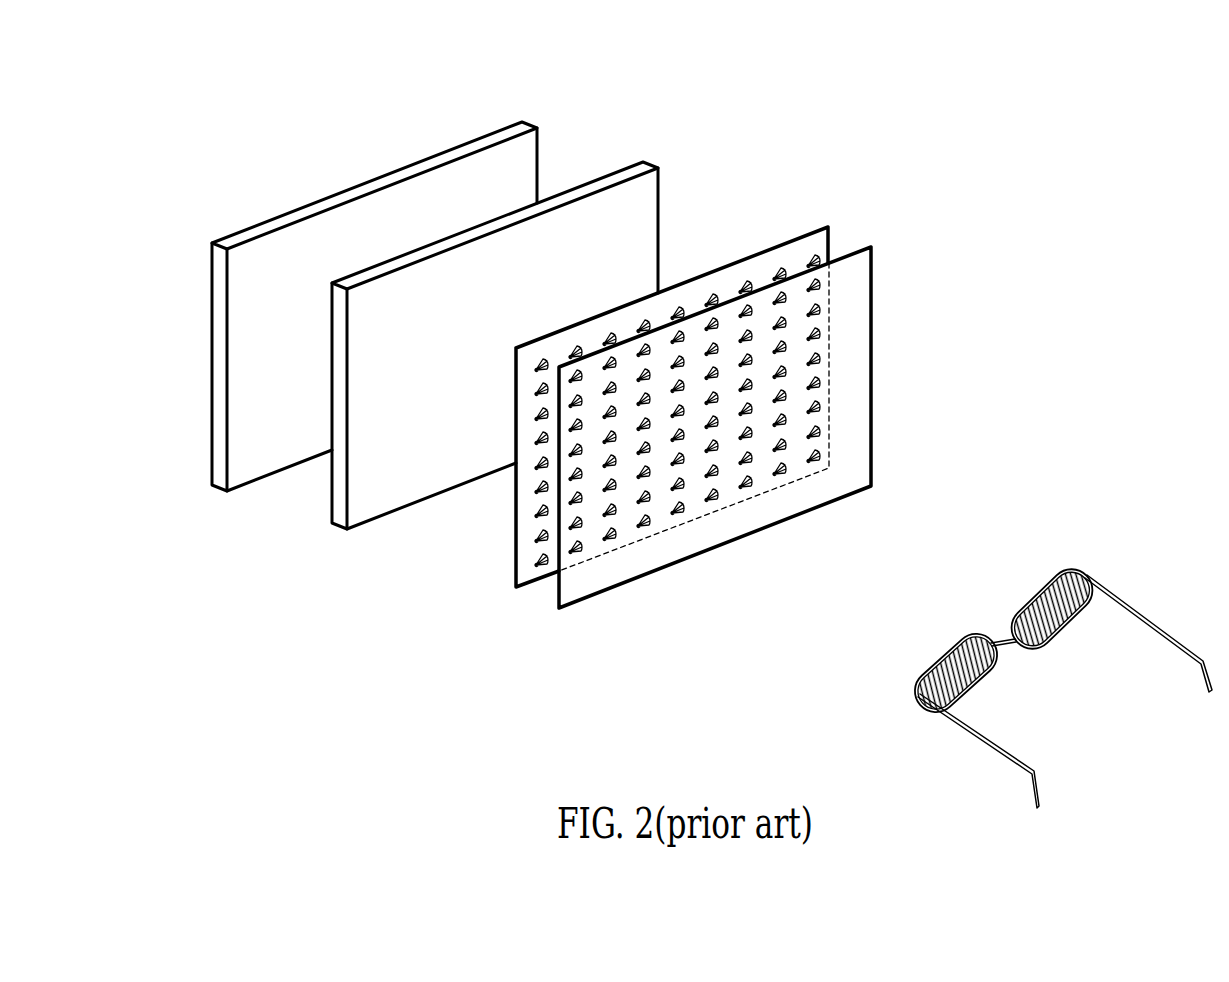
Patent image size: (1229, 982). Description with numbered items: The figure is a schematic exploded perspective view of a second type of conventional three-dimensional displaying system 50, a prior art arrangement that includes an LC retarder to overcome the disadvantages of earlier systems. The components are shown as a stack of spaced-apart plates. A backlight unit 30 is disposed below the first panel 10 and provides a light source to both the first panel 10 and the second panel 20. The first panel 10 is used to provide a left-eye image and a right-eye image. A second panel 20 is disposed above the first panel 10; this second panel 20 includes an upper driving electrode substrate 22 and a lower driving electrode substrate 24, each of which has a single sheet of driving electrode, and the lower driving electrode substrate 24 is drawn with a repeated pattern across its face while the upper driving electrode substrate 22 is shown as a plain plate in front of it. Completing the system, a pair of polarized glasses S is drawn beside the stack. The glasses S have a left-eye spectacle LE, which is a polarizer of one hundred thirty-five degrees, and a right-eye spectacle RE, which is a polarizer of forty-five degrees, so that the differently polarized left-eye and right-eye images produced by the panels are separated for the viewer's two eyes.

The 3D displaying system 50 is at (558, 396).
The backlight unit 30 is at (203, 493).
The first panel 10 is at (321, 533).
The second panel 20 is at (680, 443).
The lower driving electrode substrate 24 is at (830, 237).
The upper driving electrode substrate 22 is at (872, 265).
The pair of polarized glasses S is at (1055, 687).
The left-eye spectacle LE is at (970, 640).
The right-eye spectacle RE is at (1043, 592).